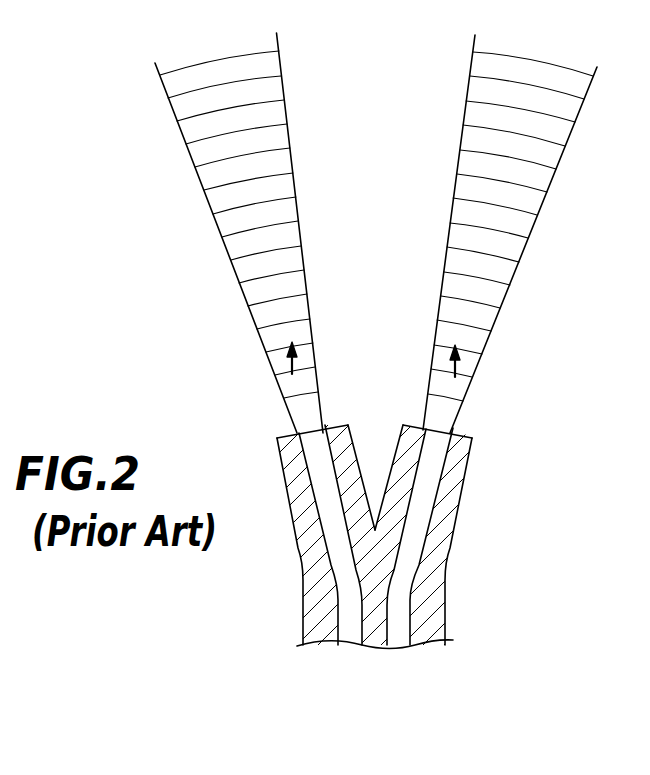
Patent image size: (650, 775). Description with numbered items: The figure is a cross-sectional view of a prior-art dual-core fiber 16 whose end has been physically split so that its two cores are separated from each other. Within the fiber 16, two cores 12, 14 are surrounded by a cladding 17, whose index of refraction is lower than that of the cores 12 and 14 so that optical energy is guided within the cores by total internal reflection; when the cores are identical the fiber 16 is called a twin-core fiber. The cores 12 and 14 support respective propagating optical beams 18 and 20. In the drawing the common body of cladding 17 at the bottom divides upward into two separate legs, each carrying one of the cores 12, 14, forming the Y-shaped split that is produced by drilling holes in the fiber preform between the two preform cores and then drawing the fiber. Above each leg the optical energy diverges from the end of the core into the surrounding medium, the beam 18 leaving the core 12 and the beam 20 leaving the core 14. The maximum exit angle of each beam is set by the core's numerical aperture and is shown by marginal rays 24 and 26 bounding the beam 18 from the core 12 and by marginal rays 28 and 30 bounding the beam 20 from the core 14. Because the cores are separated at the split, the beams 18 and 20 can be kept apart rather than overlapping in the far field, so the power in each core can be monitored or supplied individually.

The core 12 is at (320, 480).
The core 14 is at (427, 478).
The fiber 16 is at (345, 531).
The cladding 17 is at (447, 529).
The optical beam 18 is at (246, 233).
The optical beam 20 is at (509, 234).
The marginal ray 24 is at (263, 345).
The marginal ray 26 is at (310, 324).
The marginal ray 28 is at (438, 311).
The marginal ray 30 is at (490, 347).